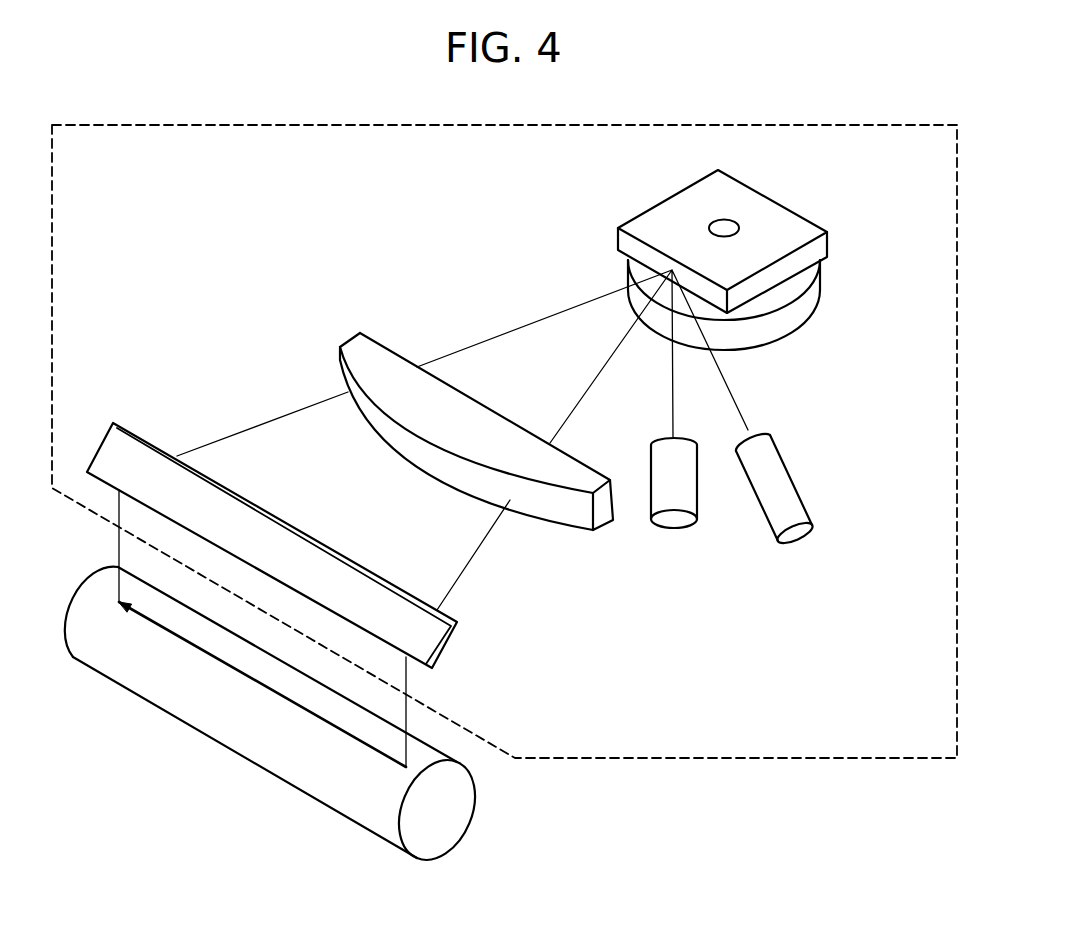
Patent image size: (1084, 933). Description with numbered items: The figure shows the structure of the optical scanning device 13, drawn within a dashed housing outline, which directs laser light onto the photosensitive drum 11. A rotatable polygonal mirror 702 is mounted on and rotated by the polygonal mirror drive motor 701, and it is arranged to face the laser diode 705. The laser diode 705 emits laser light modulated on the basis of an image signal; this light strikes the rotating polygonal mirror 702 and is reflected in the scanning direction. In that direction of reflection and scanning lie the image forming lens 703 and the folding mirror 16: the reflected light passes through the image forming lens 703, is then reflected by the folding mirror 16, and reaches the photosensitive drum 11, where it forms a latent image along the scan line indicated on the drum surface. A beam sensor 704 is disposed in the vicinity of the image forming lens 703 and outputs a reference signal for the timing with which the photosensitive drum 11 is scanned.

The optical scanning device 13 is at (750, 125).
The polygonal mirror 702 is at (763, 208).
The polygonal mirror drive motor 701 is at (782, 298).
The image forming lens 703 is at (542, 510).
The beam sensor 704 is at (675, 525).
The laser diode 705 is at (778, 477).
The folding mirror 16 is at (428, 630).
The photosensitive drum 11 is at (305, 770).